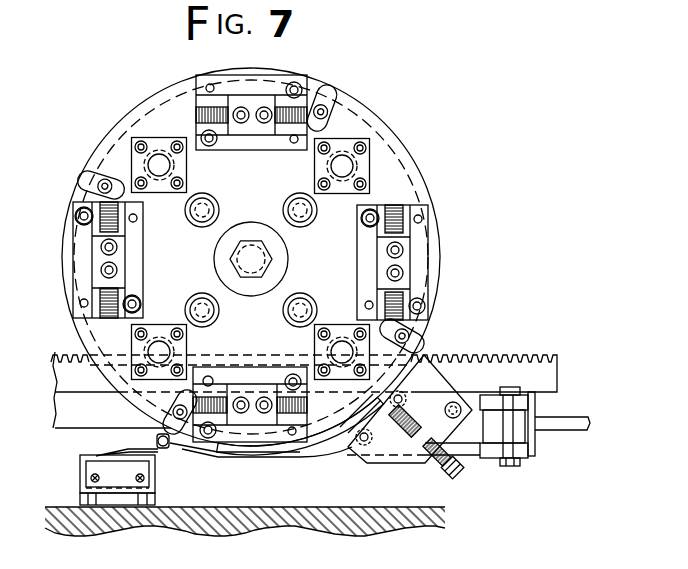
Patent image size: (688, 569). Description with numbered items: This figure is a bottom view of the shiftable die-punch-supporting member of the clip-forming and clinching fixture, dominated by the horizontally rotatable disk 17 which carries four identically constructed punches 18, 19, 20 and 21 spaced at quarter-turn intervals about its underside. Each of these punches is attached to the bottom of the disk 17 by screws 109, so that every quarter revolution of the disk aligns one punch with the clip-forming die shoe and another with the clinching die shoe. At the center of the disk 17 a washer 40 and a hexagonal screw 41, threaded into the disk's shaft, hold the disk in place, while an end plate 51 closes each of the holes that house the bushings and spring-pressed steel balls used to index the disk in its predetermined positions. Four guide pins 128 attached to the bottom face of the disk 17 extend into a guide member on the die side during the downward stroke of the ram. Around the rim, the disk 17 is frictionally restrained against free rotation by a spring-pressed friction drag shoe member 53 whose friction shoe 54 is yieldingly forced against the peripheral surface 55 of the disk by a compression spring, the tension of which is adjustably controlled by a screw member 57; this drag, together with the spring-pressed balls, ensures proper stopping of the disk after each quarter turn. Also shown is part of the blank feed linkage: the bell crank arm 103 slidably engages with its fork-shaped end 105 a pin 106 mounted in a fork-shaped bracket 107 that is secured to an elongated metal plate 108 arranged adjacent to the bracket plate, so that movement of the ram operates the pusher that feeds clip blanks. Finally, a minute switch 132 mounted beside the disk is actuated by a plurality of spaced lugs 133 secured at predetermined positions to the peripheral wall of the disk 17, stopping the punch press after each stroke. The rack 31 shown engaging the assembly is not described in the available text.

The horizontally rotatable disk 17 is at (414, 164).
The punch 18 is at (272, 141).
The punch 19 is at (144, 262).
The punch 20 is at (243, 368).
The punch 21 is at (356, 266).
The rack 31 is at (514, 375).
The washer 40 is at (226, 272).
The hexagonal screw 41 is at (250, 260).
The end plate 51 is at (165, 138).
The friction drag shoe member 53 is at (360, 454).
The friction shoe 54 is at (333, 444).
The peripheral surface 55 is at (312, 449).
The screw member 57 is at (444, 466).
The bell crank arm 103 is at (571, 431).
The fork-shaped end 105 is at (536, 410).
The pin 106 is at (510, 467).
The fork-shaped bracket 107 is at (535, 453).
The elongated metal plate 108 is at (468, 456).
The screws 109 is at (80, 216).
The guide pins 128 is at (284, 208).
The minute switch 132 is at (155, 459).
The spaced lugs 133 is at (334, 95).